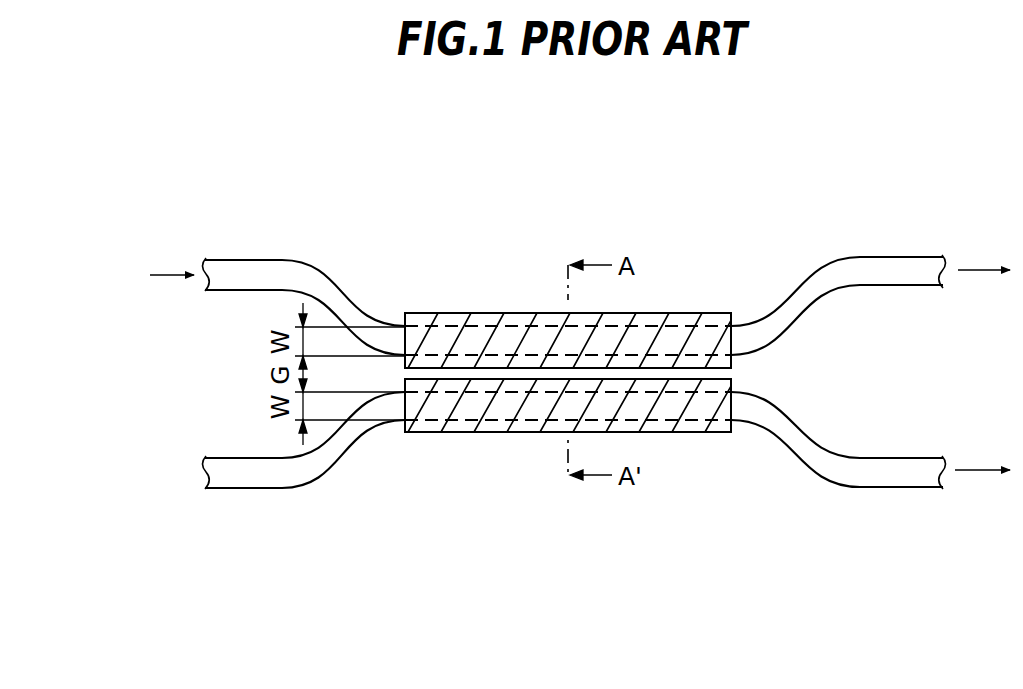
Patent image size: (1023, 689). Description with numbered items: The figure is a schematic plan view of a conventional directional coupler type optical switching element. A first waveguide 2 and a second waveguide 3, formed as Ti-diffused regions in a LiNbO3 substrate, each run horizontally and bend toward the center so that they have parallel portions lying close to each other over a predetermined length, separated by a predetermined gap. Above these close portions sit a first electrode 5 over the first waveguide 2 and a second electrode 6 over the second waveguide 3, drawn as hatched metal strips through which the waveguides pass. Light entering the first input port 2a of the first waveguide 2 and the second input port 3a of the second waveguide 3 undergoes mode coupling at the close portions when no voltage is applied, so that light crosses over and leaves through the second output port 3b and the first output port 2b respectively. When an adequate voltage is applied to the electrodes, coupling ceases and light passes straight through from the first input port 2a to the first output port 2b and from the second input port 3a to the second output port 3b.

The first waveguide 2 is at (345, 443).
The first input port 2a is at (222, 501).
The first output port 2b is at (919, 478).
The second waveguide 3 is at (343, 305).
The second input port 3a is at (228, 268).
The second output port 3b is at (918, 258).
The first electrode 5 is at (695, 432).
The second electrode 6 is at (690, 313).